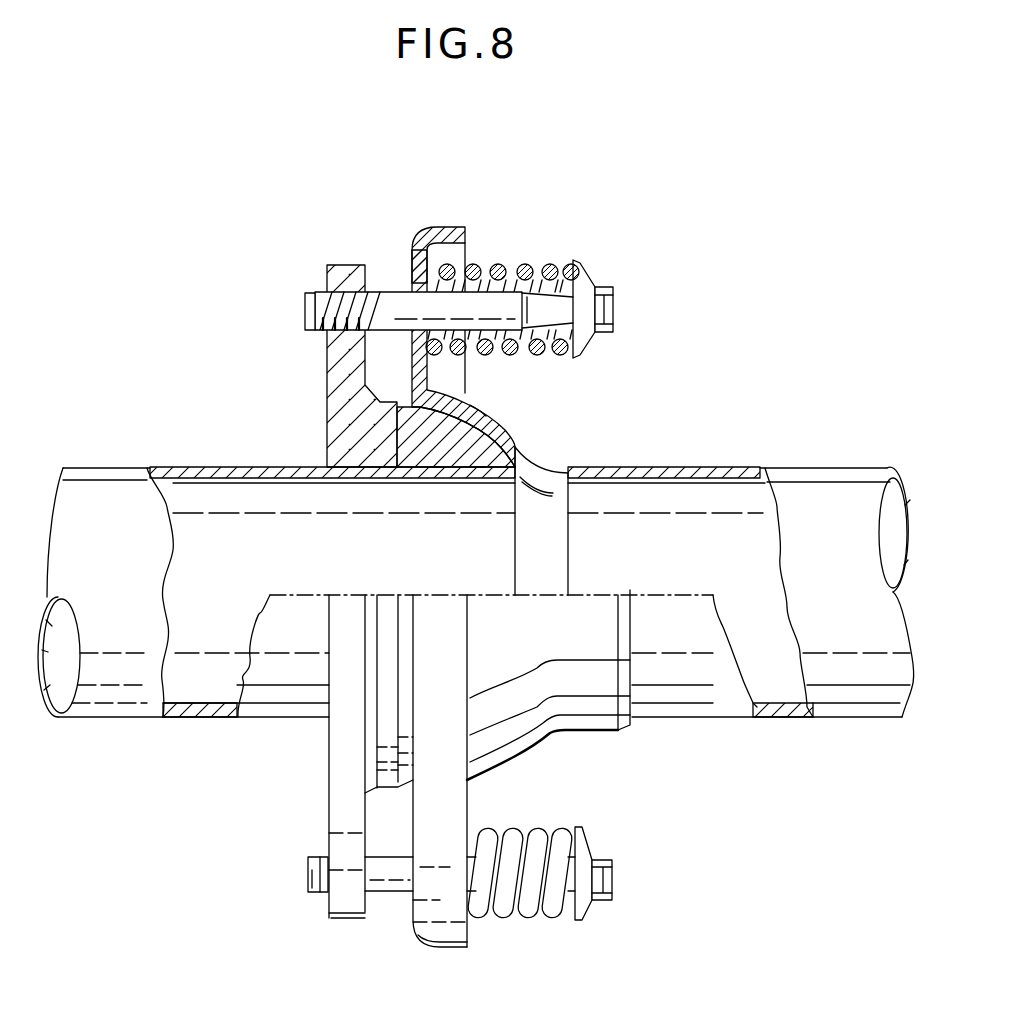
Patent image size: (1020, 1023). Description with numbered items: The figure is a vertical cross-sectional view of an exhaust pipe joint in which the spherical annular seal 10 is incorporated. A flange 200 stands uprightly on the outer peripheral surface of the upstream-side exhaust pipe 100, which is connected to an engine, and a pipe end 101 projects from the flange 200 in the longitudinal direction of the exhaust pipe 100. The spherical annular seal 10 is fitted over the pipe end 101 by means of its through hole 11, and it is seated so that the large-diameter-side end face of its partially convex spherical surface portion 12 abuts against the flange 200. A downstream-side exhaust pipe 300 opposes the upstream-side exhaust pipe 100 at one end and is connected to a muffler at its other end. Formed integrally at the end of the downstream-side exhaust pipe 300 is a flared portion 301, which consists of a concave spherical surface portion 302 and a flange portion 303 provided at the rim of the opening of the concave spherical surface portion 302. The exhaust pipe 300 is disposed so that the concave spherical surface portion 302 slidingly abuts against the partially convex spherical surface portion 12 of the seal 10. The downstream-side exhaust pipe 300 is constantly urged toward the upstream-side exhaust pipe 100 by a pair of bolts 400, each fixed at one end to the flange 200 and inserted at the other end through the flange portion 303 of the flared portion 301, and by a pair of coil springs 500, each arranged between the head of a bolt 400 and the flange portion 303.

The spherical annular seal 10 is at (400, 437).
The through hole 11 is at (480, 473).
The partially convex spherical surface portion 12 is at (484, 420).
The upstream-side exhaust pipe 100 is at (105, 466).
The pipe end 101 is at (433, 473).
The flange 200 is at (328, 350).
The downstream-side exhaust pipe 300 is at (730, 466).
The flared portion 301 is at (520, 413).
The concave spherical surface portion 302 is at (545, 437).
The flange portion 303 is at (437, 230).
The bolt 400 is at (476, 297).
The coil spring 500 is at (528, 263).